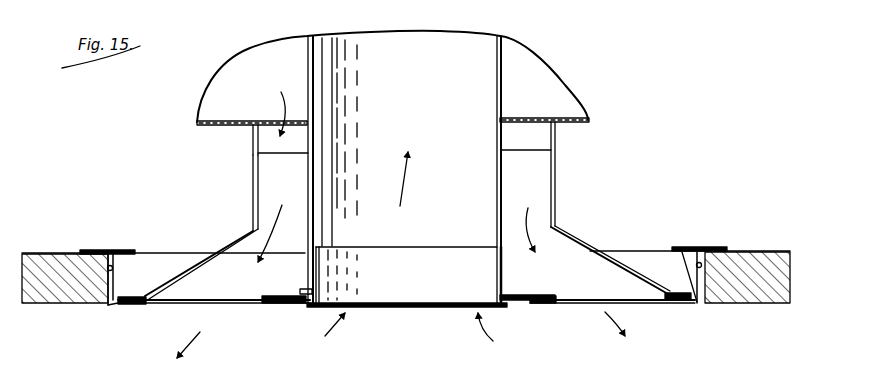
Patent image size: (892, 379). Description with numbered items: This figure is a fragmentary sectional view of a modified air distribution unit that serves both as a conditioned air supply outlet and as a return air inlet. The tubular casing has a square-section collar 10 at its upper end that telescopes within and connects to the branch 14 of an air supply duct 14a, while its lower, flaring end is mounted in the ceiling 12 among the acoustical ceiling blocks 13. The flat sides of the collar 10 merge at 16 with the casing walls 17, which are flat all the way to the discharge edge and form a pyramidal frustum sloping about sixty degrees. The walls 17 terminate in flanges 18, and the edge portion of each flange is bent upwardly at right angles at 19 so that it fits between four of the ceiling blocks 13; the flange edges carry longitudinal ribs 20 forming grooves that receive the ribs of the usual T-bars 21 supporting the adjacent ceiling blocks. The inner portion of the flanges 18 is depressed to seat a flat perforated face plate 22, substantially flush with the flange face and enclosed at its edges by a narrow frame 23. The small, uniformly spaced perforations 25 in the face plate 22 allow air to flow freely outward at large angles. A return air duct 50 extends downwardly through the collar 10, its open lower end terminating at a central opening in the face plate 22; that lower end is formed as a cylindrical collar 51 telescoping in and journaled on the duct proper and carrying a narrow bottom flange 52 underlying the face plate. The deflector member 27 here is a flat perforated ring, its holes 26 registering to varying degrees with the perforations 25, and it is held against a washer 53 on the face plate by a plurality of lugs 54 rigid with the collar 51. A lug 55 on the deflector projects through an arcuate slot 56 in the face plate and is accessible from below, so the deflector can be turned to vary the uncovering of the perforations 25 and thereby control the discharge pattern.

The collar 10 is at (253, 214).
The ceiling 12 is at (72, 308).
The ceiling blocks 13 is at (42, 262).
The branch 14 is at (253, 142).
The air supply duct 14a is at (212, 125).
The merge 16 is at (556, 229).
The casing walls 17 is at (622, 262).
The flanges 18 is at (118, 292).
The upturned flange edge 19 is at (111, 306).
The longitudinal ribs 20 is at (114, 270).
The T-bars 21 is at (93, 251).
The face plate 22 is at (212, 305).
The frame 23 is at (134, 306).
The perforations 25 is at (258, 304).
The holes 26 is at (300, 290).
The deflector member 27 is at (262, 297).
The return air duct 50 is at (498, 70).
The cylindrical collar 51 is at (505, 283).
The bottom flange 52 is at (310, 310).
The washer 53 is at (497, 298).
The lugs 54 is at (306, 272).
The lug 55 is at (553, 304).
The arcuate slot 56 is at (553, 300).